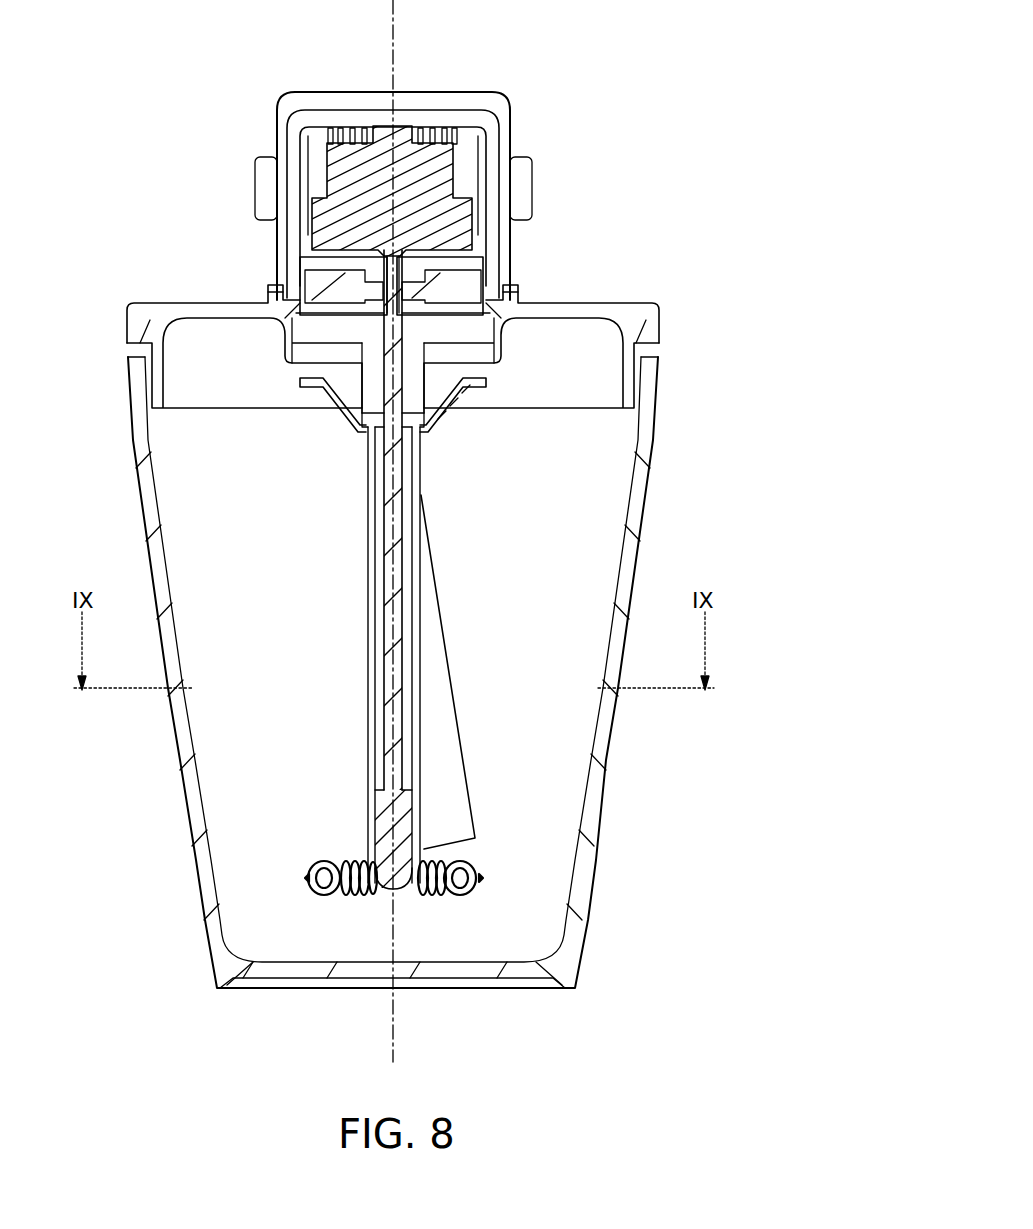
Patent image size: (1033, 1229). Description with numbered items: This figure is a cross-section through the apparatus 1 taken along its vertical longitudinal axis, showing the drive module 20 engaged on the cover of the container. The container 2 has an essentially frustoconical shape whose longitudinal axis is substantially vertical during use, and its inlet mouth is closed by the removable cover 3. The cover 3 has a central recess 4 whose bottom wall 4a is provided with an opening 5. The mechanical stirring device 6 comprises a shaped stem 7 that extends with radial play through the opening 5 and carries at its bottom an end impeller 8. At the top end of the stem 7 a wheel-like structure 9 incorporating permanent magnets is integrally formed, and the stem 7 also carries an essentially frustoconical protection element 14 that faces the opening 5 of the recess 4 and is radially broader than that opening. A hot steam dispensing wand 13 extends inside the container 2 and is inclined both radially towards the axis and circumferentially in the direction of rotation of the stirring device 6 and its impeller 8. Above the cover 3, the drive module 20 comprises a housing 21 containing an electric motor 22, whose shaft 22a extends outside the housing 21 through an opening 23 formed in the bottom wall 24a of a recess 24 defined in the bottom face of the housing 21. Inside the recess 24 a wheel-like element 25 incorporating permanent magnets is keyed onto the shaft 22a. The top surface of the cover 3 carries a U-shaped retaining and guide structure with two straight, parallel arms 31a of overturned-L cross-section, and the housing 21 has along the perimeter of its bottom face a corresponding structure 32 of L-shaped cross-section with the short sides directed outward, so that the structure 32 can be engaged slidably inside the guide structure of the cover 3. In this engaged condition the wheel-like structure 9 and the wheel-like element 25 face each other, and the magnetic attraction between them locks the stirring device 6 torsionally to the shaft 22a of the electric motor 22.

The apparatus 1 is at (600, 187).
The container 2 is at (145, 480).
The removable cover 3 is at (150, 303).
The central recess 4 is at (337, 333).
The bottom wall 4a is at (452, 398).
The opening 5 is at (360, 418).
The mechanical stirring device 6 is at (359, 634).
The shaped stem 7 is at (410, 585).
The end impeller 8 is at (345, 862).
The wheel-like structure 9 is at (500, 352).
The hot steam dispensing wand 13 is at (440, 690).
The protection element 14 is at (322, 393).
The drive module 20 is at (316, 91).
The housing 21 is at (455, 118).
The electric motor 22 is at (470, 140).
The shaft 22a is at (403, 280).
The opening 23 is at (300, 255).
The recess 24 is at (495, 270).
The bottom wall 24a is at (462, 242).
The wheel-like element 25 is at (330, 292).
The straight parallel arms 31a is at (270, 292).
The structure 32 is at (265, 325).